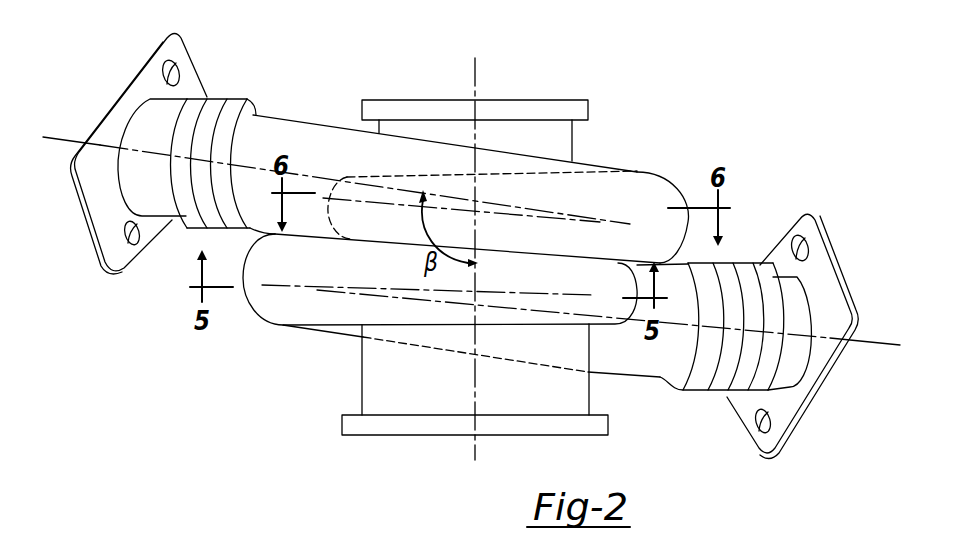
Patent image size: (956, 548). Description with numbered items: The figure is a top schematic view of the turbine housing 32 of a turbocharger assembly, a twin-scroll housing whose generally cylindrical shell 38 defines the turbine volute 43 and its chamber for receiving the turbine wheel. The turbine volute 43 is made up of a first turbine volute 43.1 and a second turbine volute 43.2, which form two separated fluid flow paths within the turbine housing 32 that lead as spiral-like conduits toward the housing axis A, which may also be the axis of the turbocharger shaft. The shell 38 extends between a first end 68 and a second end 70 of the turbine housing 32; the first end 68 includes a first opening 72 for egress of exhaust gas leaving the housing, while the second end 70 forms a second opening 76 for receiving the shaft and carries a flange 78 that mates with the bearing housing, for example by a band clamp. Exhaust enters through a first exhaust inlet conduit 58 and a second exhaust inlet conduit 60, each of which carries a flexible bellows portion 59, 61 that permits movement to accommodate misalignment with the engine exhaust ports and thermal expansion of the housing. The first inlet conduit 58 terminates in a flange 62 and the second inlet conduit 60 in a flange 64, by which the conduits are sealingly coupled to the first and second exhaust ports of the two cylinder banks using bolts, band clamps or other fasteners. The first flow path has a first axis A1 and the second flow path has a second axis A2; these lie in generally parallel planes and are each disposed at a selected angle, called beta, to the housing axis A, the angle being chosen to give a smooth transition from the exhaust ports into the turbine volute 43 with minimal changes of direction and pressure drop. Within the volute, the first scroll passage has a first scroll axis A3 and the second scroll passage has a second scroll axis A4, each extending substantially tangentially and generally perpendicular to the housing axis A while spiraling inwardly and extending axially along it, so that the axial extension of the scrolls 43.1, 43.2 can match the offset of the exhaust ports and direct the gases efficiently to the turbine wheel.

The turbine housing 32 is at (672, 120).
The shell 38 is at (594, 406).
The turbine volute 43 is at (670, 174).
The first turbine volute 43.1 is at (305, 125).
The second turbine volute 43.2 is at (292, 303).
The first exhaust inlet conduit 58 is at (137, 190).
The flexible bellows portion 59 is at (233, 100).
The second exhaust inlet conduit 60 is at (780, 375).
The flexible bellows portion 61 is at (708, 392).
The flange 62 is at (157, 46).
The flange 64 is at (764, 455).
The first end 68 is at (402, 454).
The second end 70 is at (576, 78).
The first opening 72 is at (445, 437).
The second opening 76 is at (411, 100).
The flange 78 is at (373, 100).
The housing axis A is at (477, 80).
The first axis A1 is at (55, 133).
The second axis A2 is at (875, 343).
The first scroll axis A3 is at (525, 217).
The second scroll axis A4 is at (585, 295).